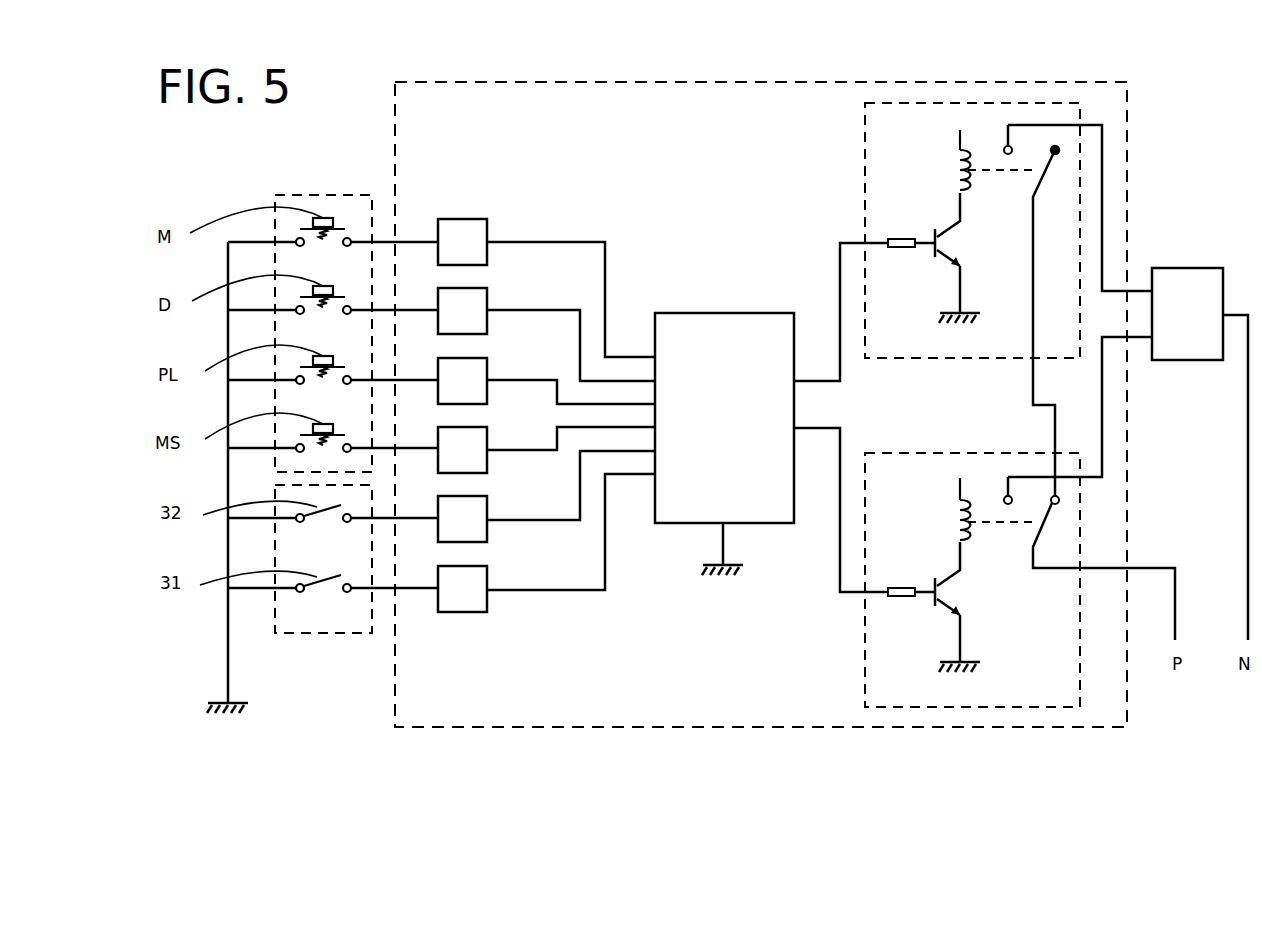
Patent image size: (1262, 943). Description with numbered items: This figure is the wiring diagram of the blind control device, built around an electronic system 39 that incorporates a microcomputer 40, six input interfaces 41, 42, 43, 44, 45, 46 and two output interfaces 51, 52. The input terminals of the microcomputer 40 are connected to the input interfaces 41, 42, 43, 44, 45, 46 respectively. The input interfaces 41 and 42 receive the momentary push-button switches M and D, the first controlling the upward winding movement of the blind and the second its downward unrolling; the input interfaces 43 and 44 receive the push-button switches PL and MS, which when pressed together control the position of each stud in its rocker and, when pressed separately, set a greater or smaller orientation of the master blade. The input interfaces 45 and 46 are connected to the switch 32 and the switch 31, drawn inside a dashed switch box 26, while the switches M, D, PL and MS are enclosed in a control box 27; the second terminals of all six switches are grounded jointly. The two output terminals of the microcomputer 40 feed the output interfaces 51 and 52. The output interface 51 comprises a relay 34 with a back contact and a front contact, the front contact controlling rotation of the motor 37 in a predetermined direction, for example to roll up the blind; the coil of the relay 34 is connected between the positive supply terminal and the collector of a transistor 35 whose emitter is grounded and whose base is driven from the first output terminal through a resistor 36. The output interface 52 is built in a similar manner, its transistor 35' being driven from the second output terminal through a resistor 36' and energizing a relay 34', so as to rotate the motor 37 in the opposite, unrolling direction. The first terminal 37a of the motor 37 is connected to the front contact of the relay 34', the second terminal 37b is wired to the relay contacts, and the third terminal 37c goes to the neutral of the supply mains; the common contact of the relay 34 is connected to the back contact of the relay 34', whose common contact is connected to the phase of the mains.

The switch box 26 is at (323, 584).
The control box 27 is at (343, 195).
The switch 31 is at (323, 583).
The switch 32 is at (323, 513).
The relay 34 is at (1013, 310).
The relay 34' is at (1071, 558).
The transistor 35 is at (950, 224).
The transistor 35' is at (959, 574).
The resistor 36 is at (911, 229).
The resistor 36' is at (911, 579).
The motor 37 is at (1200, 326).
The first terminal of motor 37a is at (1127, 291).
The second terminal of motor 37b is at (1130, 337).
The third terminal of motor 37c is at (1226, 315).
The electronic system 39 is at (448, 126).
The microcomputer 40 is at (775, 507).
The input interface 41 is at (474, 253).
The input interface 42 is at (474, 321).
The input interface 43 is at (474, 391).
The input interface 44 is at (474, 460).
The input interface 45 is at (474, 530).
The input interface 46 is at (474, 600).
The output interface 51 is at (862, 118).
The output interface 52 is at (860, 630).